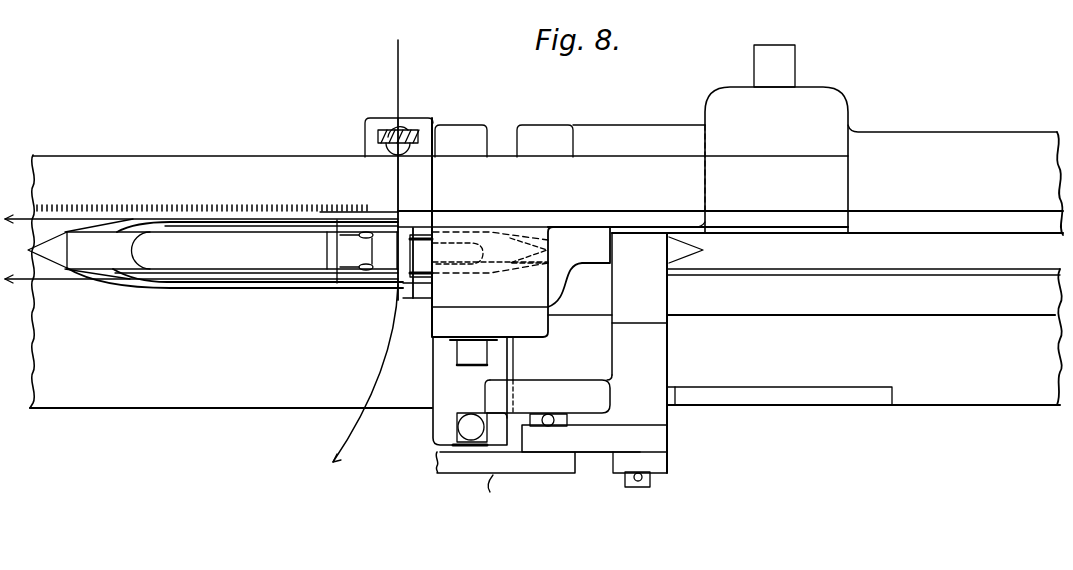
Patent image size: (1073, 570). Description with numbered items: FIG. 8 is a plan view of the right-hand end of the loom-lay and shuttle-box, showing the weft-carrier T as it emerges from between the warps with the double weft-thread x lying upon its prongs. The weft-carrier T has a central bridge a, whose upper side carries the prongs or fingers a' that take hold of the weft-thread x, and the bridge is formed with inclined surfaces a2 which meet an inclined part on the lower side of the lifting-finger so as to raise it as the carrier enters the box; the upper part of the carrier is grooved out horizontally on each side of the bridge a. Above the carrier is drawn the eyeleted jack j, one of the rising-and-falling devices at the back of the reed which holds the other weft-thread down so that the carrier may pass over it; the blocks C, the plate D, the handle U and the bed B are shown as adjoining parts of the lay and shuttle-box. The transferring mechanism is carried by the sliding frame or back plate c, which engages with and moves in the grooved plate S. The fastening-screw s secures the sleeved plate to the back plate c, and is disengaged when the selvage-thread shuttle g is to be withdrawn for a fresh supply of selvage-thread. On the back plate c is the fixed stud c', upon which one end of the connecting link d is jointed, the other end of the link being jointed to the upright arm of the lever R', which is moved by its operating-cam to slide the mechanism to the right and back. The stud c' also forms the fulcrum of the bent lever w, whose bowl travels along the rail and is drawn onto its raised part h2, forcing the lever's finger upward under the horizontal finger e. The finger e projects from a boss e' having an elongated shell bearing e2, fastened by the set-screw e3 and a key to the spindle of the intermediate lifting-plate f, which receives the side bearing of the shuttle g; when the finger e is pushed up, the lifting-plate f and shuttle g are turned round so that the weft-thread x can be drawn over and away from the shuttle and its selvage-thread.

The rack plate D is at (439, 281).
The weft-thread x is at (201, 251).
The weft-carrier T is at (215, 253).
The central bridge a is at (371, 250).
The inclined surfaces a2 is at (322, 251).
The prongs or fingers a' is at (365, 248).
The selvage-thread shuttle g is at (416, 263).
The intermediate lifting-plate f is at (417, 298).
The jack j is at (396, 128).
The carriage blocks C is at (504, 141).
The grooved plate S is at (730, 227).
The handle U is at (776, 139).
The sliding frame or back plate c is at (522, 272).
The fixed stud c' is at (655, 370).
The bed B is at (546, 338).
The raised part of rail h2 is at (779, 395).
The shell bearing e2 is at (473, 391).
The fastening-screw s is at (473, 352).
The boss e' is at (477, 396).
The horizontal finger e is at (548, 396).
The bent lever w is at (627, 394).
The set-screw e3 is at (480, 429).
The connecting plate or link d is at (594, 433).
The lever R' is at (538, 481).